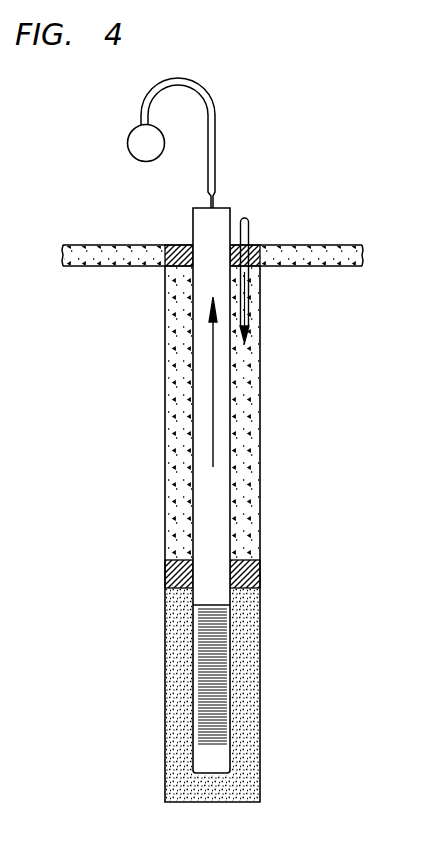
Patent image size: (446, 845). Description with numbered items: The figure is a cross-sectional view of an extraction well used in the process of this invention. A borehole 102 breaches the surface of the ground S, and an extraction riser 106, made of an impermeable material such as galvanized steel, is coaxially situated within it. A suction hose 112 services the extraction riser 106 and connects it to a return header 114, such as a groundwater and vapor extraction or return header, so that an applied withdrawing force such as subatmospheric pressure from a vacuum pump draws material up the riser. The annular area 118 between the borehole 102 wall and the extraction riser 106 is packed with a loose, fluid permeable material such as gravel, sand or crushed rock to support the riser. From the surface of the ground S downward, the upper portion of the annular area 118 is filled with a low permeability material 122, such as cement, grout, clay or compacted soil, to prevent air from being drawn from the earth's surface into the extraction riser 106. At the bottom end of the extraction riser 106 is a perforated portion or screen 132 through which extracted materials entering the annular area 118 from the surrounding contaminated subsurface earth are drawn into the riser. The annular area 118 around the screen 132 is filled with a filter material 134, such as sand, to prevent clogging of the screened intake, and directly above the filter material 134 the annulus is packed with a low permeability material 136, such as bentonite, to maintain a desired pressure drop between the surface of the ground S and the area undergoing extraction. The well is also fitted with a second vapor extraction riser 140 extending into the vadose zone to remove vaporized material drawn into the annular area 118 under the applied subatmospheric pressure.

The surface of the ground S is at (320, 246).
The borehole 102 is at (262, 308).
The extraction riser 106 is at (231, 367).
The suction hose 112 is at (216, 138).
The return header 114 is at (126, 143).
The annular area 118 is at (178, 440).
The low permeability material 122 is at (180, 245).
The screen 132 is at (230, 646).
The filter material 134 is at (172, 659).
The low permeability material 136 is at (165, 574).
The second vapor extraction riser 140 is at (252, 229).